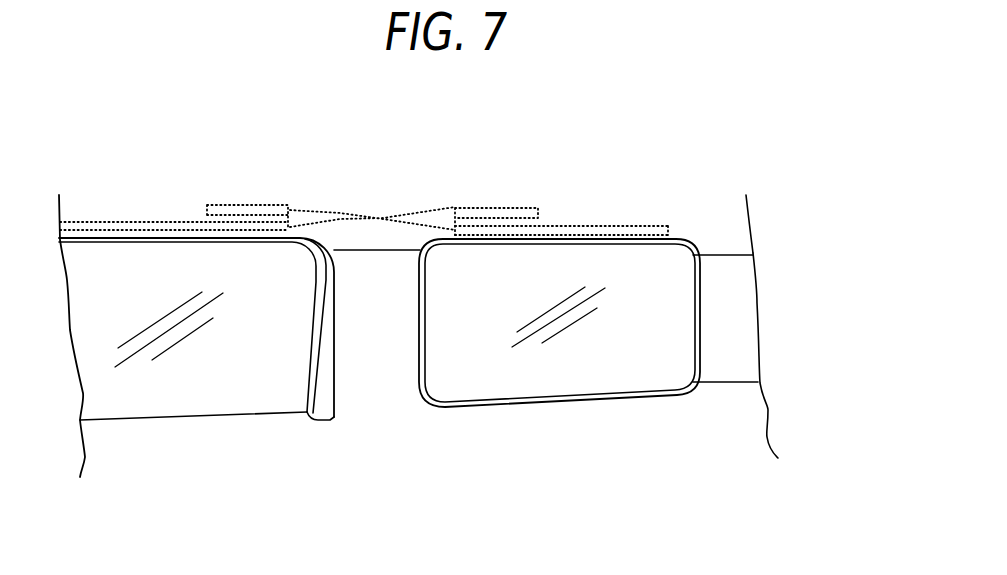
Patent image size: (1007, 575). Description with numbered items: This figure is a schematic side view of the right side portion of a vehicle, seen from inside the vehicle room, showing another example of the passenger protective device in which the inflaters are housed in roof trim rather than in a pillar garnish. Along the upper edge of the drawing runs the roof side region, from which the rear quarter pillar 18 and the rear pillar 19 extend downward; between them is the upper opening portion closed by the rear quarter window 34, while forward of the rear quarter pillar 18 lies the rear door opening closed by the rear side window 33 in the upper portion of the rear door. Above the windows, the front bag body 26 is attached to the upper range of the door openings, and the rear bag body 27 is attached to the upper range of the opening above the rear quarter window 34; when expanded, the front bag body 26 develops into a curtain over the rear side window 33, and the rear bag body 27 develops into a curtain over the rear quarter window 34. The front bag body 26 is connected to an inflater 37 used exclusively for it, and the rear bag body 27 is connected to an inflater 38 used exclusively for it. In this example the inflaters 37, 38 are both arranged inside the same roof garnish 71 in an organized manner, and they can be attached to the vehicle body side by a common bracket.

The rear quarter pillar 18 is at (385, 400).
The rear pillar 19 is at (742, 322).
The front bag body 26 is at (108, 222).
The rear bag body 27 is at (614, 230).
The rear side window 33 is at (208, 382).
The rear quarter window 34 is at (557, 372).
The inflater 37 is at (493, 210).
The inflater 38 is at (243, 206).
The roof garnish 71 is at (722, 227).